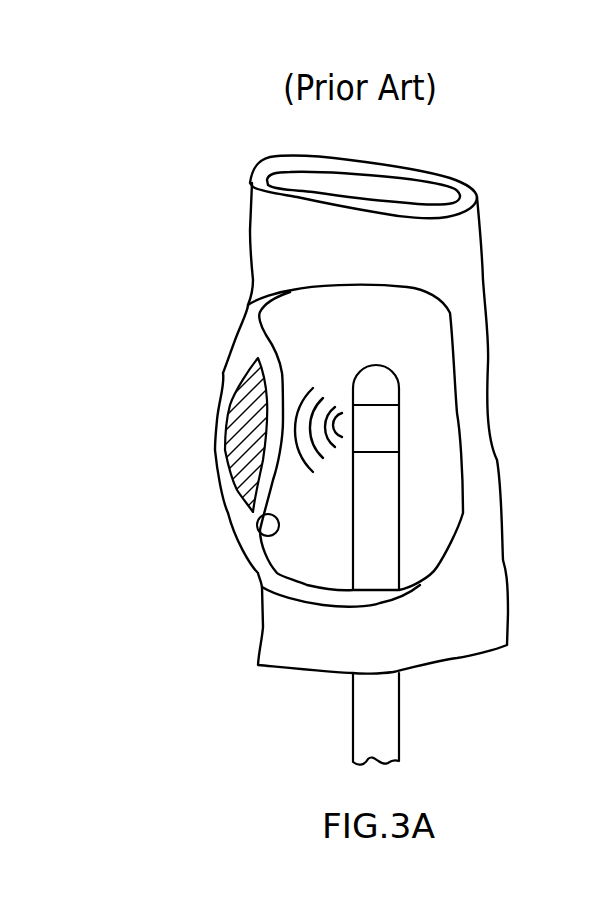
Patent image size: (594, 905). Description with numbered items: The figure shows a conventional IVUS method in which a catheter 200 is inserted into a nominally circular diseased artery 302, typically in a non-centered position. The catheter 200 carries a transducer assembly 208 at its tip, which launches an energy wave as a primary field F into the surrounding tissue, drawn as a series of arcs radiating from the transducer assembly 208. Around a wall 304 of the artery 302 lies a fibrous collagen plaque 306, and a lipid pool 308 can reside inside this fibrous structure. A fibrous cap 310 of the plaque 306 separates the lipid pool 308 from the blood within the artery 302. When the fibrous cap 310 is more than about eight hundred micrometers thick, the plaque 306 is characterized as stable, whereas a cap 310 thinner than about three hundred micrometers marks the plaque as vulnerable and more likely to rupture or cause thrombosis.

The catheter 200 is at (399, 722).
The transducer assembly 208 is at (399, 425).
The artery 302 is at (503, 535).
The wall 304 is at (443, 186).
The fibrous collagen plaque 306 is at (223, 487).
The lipid pool 308 is at (227, 425).
The fibrous cap 310 is at (260, 537).
The primary field F is at (310, 388).